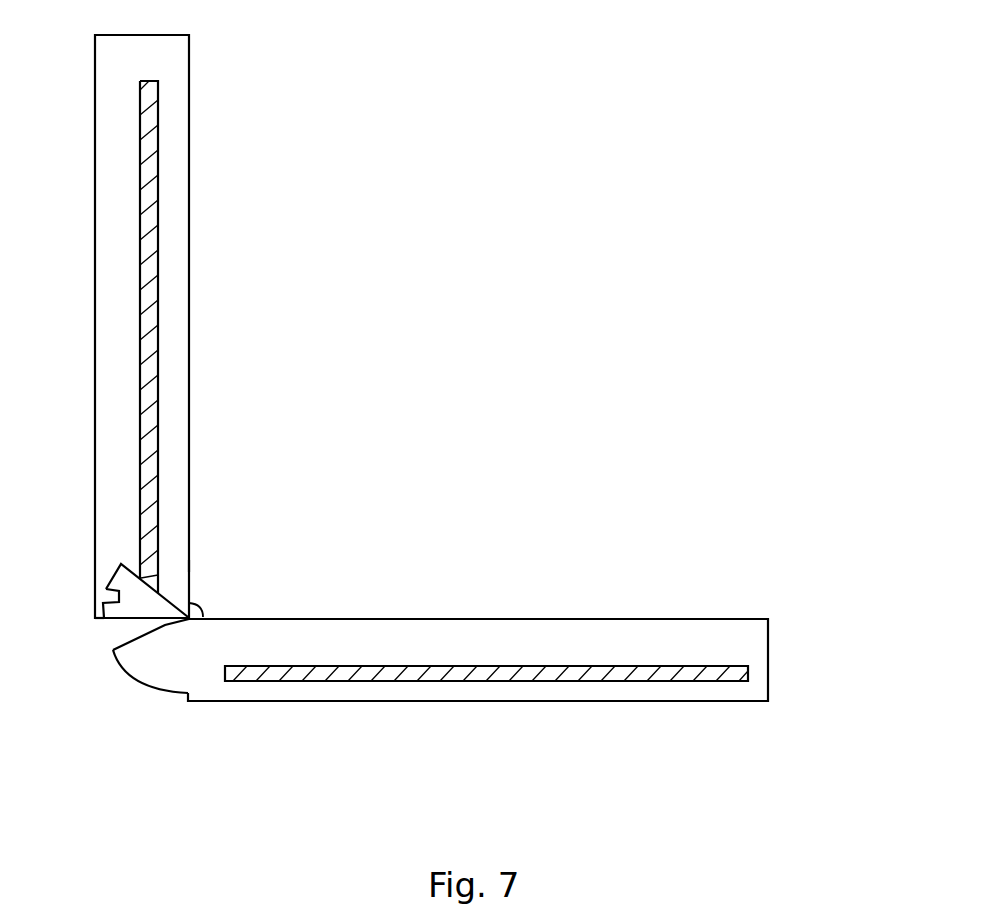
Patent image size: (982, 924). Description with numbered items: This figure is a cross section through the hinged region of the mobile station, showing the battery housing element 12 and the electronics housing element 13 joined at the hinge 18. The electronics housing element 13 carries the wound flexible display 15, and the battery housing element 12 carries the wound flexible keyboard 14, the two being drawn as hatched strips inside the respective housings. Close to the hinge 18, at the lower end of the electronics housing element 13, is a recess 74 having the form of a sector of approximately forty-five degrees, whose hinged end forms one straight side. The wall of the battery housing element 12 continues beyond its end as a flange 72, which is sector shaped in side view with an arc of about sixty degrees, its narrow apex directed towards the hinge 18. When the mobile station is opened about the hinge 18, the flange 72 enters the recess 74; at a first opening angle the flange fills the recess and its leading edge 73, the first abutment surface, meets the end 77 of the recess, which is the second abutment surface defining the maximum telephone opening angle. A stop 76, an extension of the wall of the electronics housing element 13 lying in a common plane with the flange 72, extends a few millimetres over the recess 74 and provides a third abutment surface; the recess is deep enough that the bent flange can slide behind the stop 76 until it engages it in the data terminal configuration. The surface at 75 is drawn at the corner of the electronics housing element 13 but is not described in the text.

The battery housing element 12 is at (527, 620).
The electronics housing element 13 is at (178, 250).
The flexible keyboard 14 is at (748, 666).
The flexible display 15 is at (158, 130).
The hinge 18 is at (202, 613).
The flange 72 is at (166, 672).
The leading edge 73 is at (135, 639).
The recess 74 is at (143, 610).
The panel bottom corner 75 is at (100, 620).
The stop 76 is at (108, 601).
The end of the recess 77 is at (158, 593).